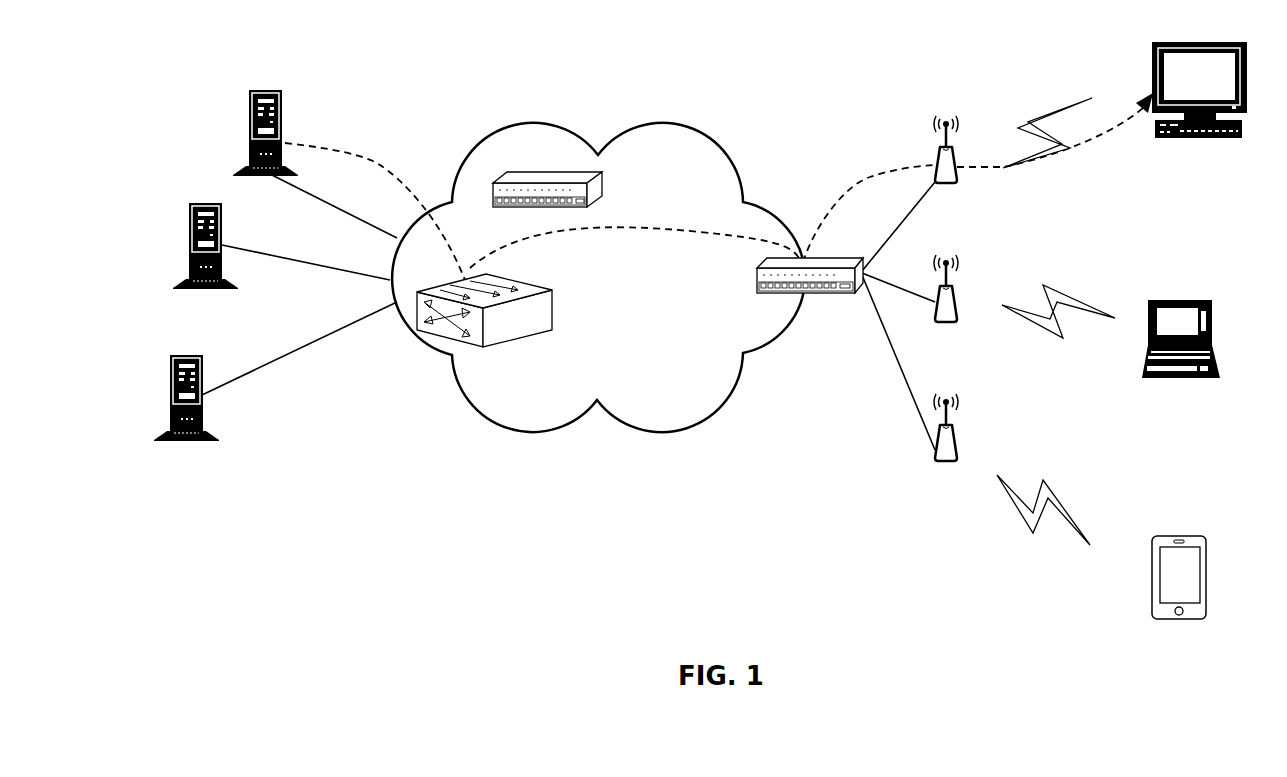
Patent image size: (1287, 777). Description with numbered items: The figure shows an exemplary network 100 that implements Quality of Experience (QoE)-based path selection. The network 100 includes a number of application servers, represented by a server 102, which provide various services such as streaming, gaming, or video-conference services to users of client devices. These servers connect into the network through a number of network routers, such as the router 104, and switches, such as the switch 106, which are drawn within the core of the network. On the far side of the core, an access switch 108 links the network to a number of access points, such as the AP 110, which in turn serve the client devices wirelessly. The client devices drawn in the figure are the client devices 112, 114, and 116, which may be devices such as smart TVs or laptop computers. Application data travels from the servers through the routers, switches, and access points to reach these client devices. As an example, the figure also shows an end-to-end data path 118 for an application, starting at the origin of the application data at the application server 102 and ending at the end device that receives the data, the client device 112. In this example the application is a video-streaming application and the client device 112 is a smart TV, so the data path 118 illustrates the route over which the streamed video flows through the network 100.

The network 100 is at (722, 610).
The server 102 is at (283, 132).
The router 104 is at (512, 325).
The switch 106 is at (546, 178).
The access switch 108 is at (797, 295).
The access point 110 is at (935, 165).
The client device 112 is at (1196, 139).
The client device 114 is at (1172, 378).
The client device 116 is at (1175, 620).
The end-to-end data path 118 is at (380, 166).